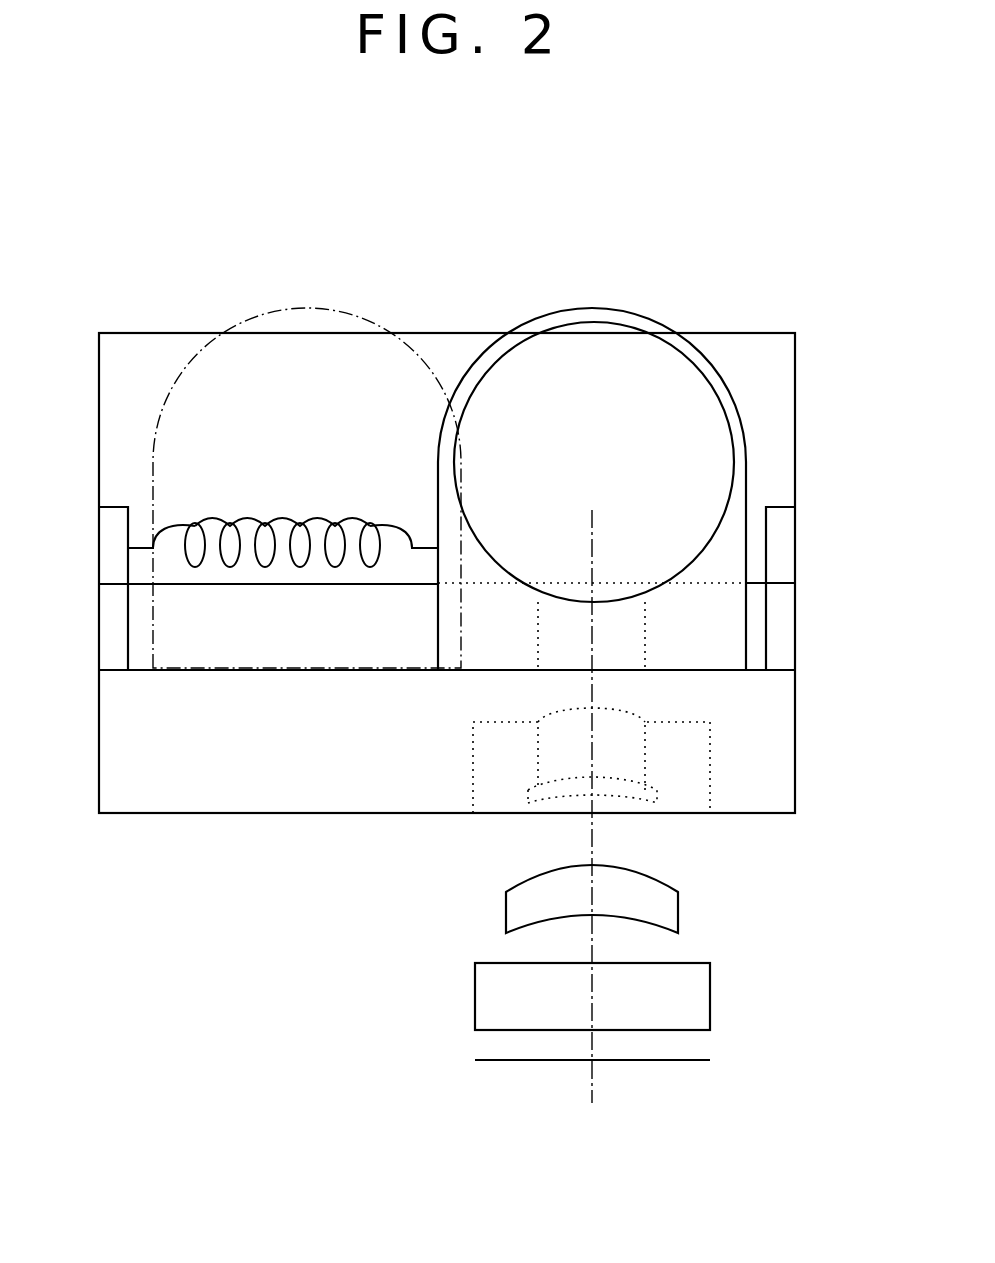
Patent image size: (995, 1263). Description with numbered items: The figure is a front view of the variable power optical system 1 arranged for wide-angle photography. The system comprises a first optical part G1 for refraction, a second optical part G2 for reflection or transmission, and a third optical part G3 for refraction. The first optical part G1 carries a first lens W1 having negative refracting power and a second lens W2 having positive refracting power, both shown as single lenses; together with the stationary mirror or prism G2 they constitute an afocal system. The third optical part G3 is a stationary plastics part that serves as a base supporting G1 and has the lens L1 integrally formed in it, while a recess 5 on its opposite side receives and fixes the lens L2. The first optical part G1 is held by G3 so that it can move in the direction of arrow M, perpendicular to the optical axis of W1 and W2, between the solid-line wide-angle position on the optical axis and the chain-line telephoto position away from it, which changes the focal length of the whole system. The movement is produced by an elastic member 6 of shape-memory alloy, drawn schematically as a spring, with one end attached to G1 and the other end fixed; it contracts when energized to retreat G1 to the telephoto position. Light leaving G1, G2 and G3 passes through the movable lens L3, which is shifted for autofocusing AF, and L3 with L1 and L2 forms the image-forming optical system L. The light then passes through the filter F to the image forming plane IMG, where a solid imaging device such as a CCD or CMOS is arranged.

The variable power optical system 1 is at (660, 258).
The first optical part G1 is at (148, 478).
The second optical part G2 is at (767, 389).
The third optical part G3 is at (198, 793).
The first lens W1 is at (682, 390).
The second lens W2 is at (628, 641).
The elastic member 6 is at (248, 520).
The direction of movement arrow M is at (593, 246).
The lens L1 is at (628, 758).
The lens L2 is at (548, 812).
The recess 5 is at (635, 812).
The movable lens L3 is at (678, 908).
The autofocusing AF is at (485, 885).
The image-forming optical system L is at (395, 945).
The filter F is at (710, 995).
The image forming plane IMG is at (697, 1060).